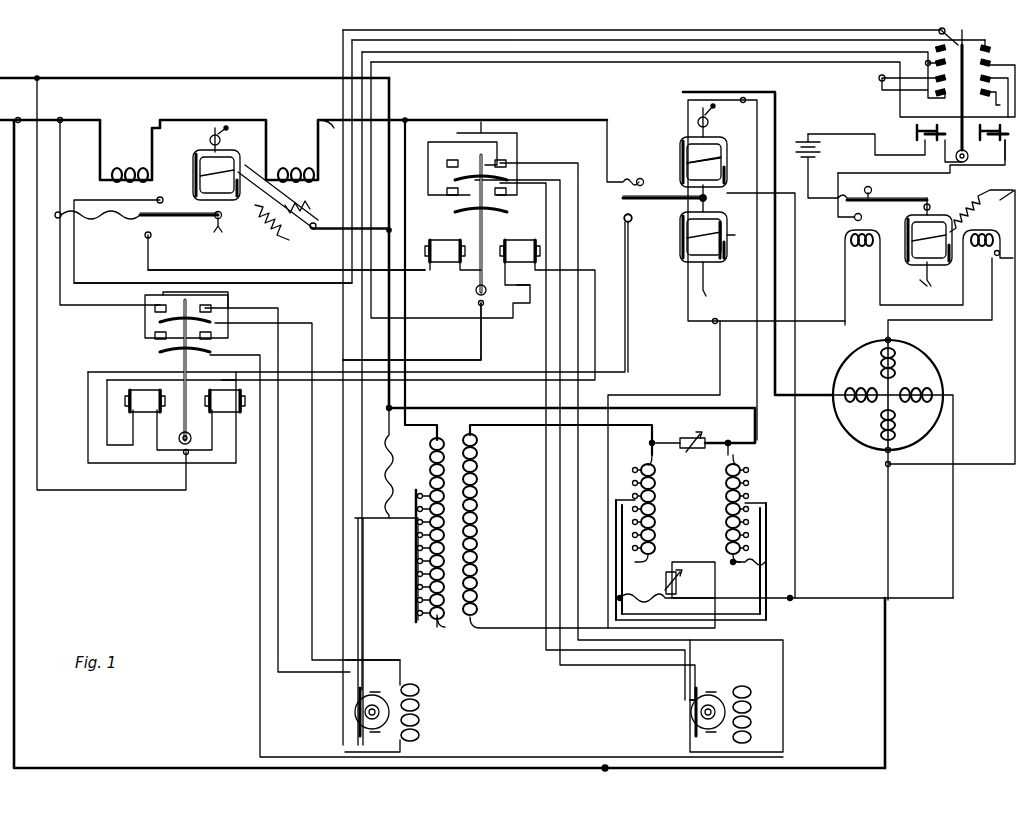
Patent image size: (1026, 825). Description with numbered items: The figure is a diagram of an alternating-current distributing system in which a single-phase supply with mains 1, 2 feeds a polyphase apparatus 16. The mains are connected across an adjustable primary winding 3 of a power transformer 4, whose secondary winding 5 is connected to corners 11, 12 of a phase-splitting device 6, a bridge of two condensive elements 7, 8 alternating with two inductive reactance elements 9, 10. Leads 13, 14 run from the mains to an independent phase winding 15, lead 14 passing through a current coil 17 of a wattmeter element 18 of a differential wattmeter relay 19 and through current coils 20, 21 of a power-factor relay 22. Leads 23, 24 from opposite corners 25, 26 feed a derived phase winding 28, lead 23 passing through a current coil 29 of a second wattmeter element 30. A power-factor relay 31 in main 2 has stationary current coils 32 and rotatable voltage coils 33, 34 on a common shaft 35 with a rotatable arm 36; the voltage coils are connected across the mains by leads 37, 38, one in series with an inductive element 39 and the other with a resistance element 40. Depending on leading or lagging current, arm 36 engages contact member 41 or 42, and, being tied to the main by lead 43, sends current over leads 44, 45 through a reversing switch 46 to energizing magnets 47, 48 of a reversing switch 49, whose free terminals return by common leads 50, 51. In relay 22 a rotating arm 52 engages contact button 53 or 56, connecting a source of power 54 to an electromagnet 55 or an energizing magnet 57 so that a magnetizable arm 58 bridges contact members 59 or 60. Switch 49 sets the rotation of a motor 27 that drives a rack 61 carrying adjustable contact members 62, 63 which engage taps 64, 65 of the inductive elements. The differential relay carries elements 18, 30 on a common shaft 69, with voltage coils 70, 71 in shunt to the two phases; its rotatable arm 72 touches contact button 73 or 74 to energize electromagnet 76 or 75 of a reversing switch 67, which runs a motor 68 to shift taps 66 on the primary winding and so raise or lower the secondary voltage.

The main 1 is at (100, 80).
The main 2 is at (78, 118).
The adjustable primary winding 3 is at (430, 442).
The power transformer 4 is at (446, 638).
The secondary winding 5 is at (482, 470).
The phase-splitting device 6 is at (690, 498).
The condensive element 7 is at (690, 438).
The condensive element 8 is at (682, 580).
The inductive reactance element 9 is at (658, 485).
The inductive reactance element 10 is at (724, 475).
The corner 11 is at (650, 443).
The corner 12 is at (716, 560).
The lead 13 is at (884, 636).
The lead 14 is at (672, 395).
The independent phase winding 15 is at (880, 424).
The polyphase apparatus 16 is at (904, 395).
The current coil 17 is at (679, 240).
The wattmeter element 18 is at (727, 232).
The differential wattmeter relay 19 is at (725, 200).
The current coil 20 is at (861, 246).
The current coil 21 is at (981, 246).
The power-factor relay 22 is at (959, 233).
The lead 23 is at (753, 440).
The lead 24 is at (848, 596).
The corner 25 is at (727, 440).
The corner 26 is at (704, 604).
The motor 27 is at (721, 700).
The phase winding 28 is at (916, 388).
The current coil 29 is at (679, 150).
The wattmeter element 30 is at (712, 125).
The power-factor relay 31 is at (204, 163).
The stationary current coil 32 is at (130, 168).
The voltage coil 33 is at (228, 143).
The voltage coil 34 is at (238, 175).
The common shaft 35 is at (229, 229).
The rotatable arm 36 is at (205, 222).
The lead 37 is at (334, 230).
The lead 38 is at (332, 127).
The inductive element 39 is at (310, 210).
The resistance element 40 is at (280, 240).
The contact member 41 is at (172, 199).
The contact member 42 is at (144, 236).
The lead 43 is at (64, 212).
The lead 44 is at (500, 35).
The lead 45 is at (556, 45).
The reversing switch 46 is at (978, 94).
The energizing magnet 47 is at (440, 240).
The energizing magnet 48 is at (518, 244).
The reversing switch 49 is at (502, 214).
The common lead 50 is at (444, 360).
The common lead 51 is at (390, 96).
The rotating arm 52 is at (907, 200).
The contact button 53 is at (855, 188).
The source of power 54 is at (822, 158).
The electromagnet 55 is at (916, 129).
The contact button 56 is at (863, 218).
The energizing magnet 57 is at (1005, 145).
The magnetizable arm 58 is at (961, 26).
The stationary contact members 59 is at (927, 70).
The contact members 60 is at (992, 62).
The rack 61 is at (688, 697).
The adjustable contact member 62 is at (622, 494).
The adjustable contact member 63 is at (764, 503).
The taps 64 is at (638, 552).
The taps 65 is at (743, 552).
The taps 66 is at (415, 552).
The reversing switch 67 is at (165, 368).
The motor 68 is at (395, 702).
The common shaft 69 is at (702, 285).
The voltage coil 70 is at (722, 243).
The voltage coil 71 is at (687, 172).
The rotatable arm 72 is at (676, 201).
The contact button 73 is at (637, 179).
The contact button 74 is at (615, 225).
The electromagnet 75 is at (150, 410).
The electromagnet 76 is at (226, 410).